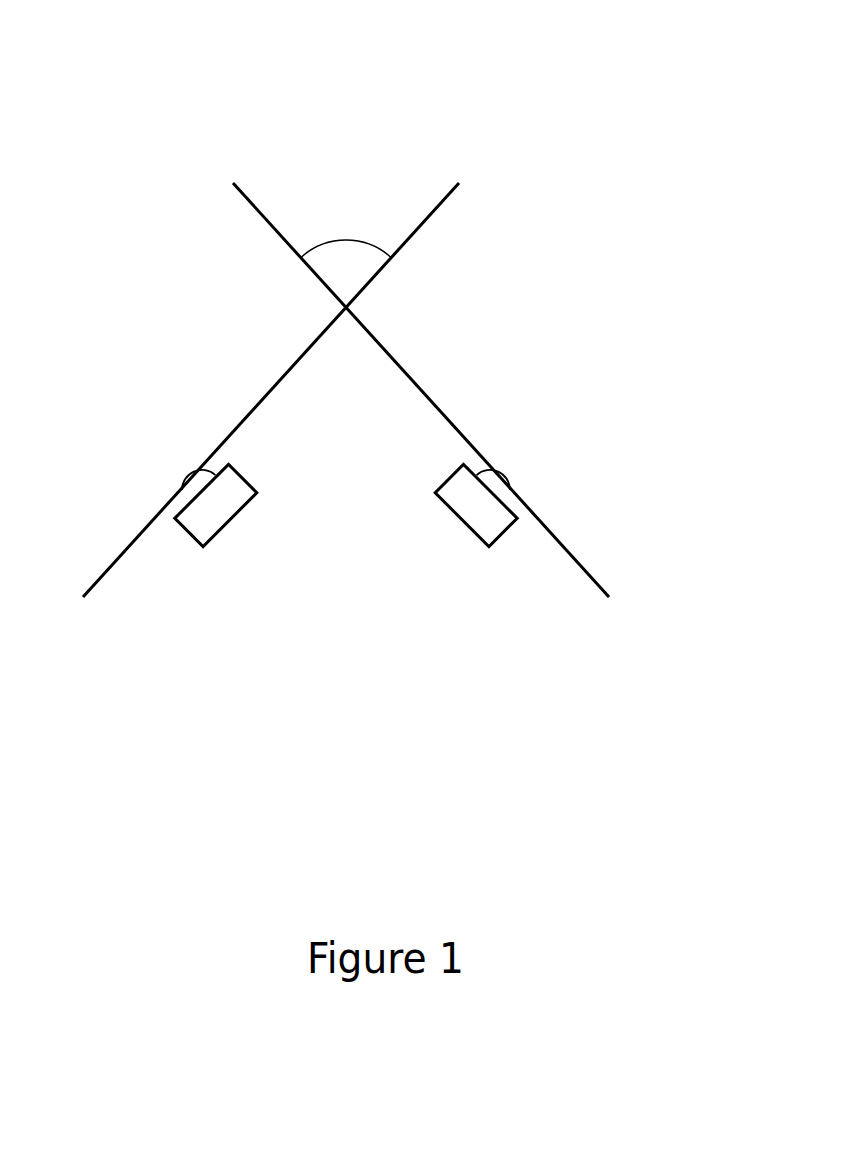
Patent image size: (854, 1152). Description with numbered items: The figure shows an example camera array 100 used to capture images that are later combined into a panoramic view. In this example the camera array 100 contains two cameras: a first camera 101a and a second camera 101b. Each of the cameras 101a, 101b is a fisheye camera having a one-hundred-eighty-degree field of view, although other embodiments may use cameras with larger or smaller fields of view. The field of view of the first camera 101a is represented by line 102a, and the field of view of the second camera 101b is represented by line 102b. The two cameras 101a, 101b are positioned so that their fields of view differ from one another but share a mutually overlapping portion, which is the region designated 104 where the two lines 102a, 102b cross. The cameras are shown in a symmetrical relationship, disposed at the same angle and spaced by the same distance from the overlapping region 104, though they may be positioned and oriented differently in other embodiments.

The camera array 100 is at (458, 53).
The first camera 101a is at (217, 532).
The second camera 101b is at (475, 532).
The line representing field of view of first camera 102a is at (440, 203).
The line representing field of view of second camera 102b is at (555, 537).
The overlapping region of fields of view 104 is at (355, 240).